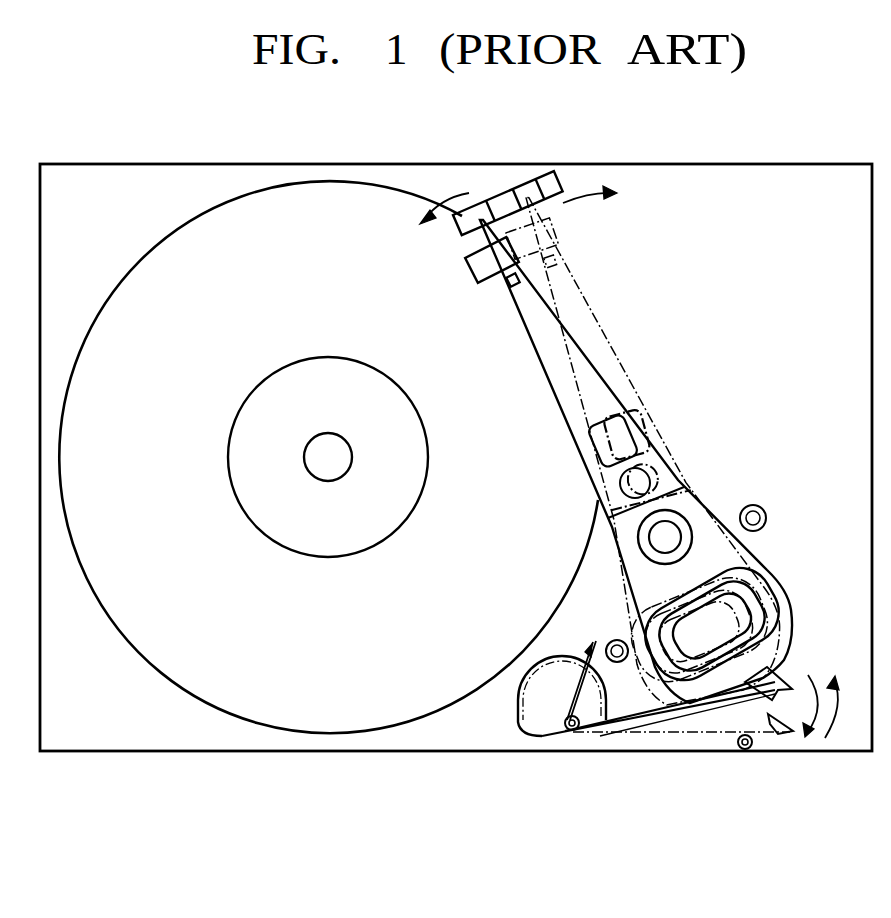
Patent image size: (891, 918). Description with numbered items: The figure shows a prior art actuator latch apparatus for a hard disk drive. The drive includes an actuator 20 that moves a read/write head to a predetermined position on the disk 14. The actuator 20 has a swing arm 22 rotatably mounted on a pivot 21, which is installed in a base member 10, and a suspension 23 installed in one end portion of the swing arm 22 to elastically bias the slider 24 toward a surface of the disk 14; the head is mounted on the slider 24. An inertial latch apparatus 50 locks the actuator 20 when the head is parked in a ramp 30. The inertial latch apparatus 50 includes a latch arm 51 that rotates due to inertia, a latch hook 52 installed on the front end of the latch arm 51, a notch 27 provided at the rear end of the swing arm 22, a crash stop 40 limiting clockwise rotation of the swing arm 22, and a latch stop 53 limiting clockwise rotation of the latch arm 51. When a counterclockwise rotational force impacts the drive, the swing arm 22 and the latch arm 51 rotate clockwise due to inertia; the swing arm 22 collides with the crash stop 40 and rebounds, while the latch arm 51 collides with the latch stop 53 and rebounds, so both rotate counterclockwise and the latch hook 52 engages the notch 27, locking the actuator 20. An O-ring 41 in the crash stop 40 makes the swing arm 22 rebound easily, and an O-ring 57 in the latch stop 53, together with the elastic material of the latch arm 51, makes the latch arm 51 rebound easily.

The base member 10 is at (768, 172).
The disk 14 is at (170, 258).
The actuator 20 is at (692, 393).
The pivot 21 is at (672, 532).
The swing arm 22 is at (592, 376).
The suspension 23 is at (502, 282).
The slider 24 is at (477, 263).
The notch 27 is at (763, 673).
The ramp 30 is at (548, 170).
The crash stop 40 is at (600, 647).
The O-ring 41 is at (615, 640).
The inertial latch apparatus 50 is at (602, 736).
The latch arm 51 is at (653, 718).
The latch hook 52 is at (782, 692).
The latch stop 53 is at (744, 750).
The O-ring 57 is at (735, 744).